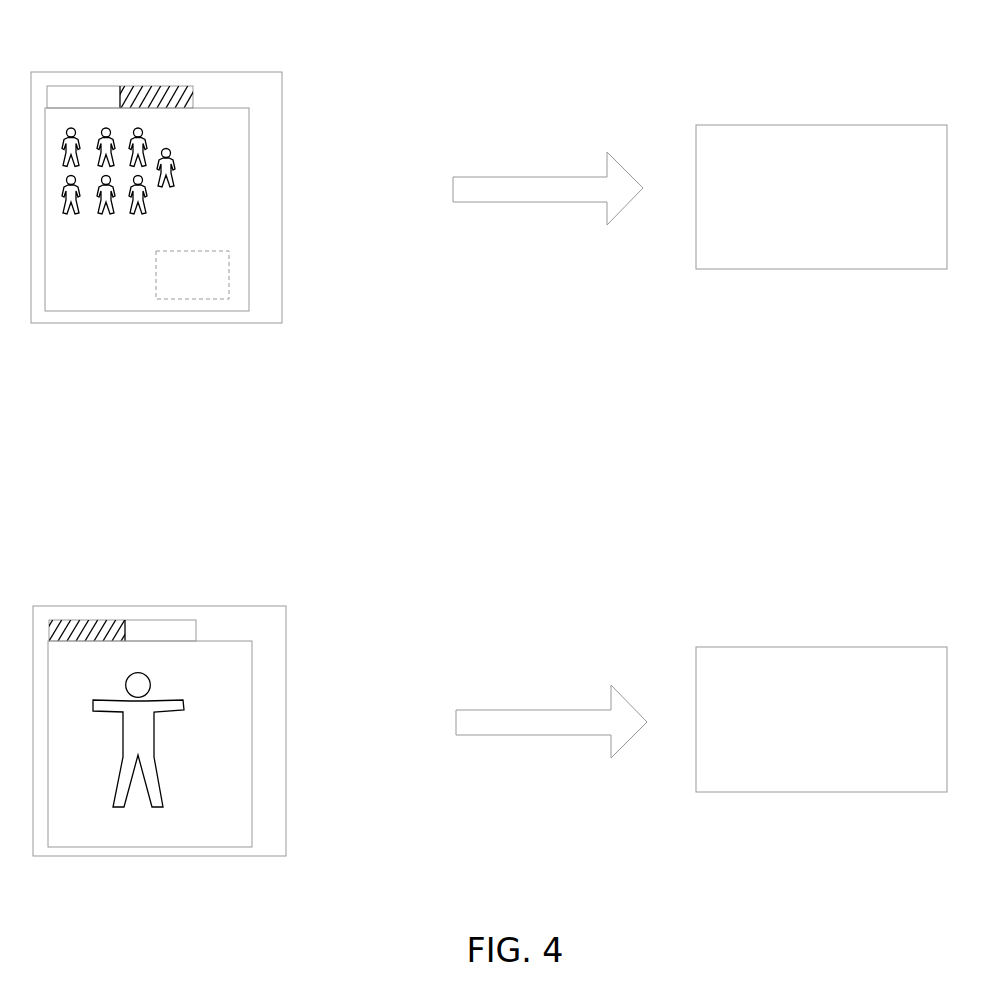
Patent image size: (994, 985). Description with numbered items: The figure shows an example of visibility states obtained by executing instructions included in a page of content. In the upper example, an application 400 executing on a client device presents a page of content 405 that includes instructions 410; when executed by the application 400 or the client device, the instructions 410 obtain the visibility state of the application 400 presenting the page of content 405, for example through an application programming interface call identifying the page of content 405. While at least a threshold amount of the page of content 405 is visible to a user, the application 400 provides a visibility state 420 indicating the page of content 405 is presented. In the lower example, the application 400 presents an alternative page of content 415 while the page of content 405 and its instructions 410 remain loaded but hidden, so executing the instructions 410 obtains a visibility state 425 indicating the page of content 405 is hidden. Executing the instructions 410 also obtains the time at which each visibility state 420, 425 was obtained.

The application 400 is at (248, 210).
The page of content 405 is at (203, 143).
The instructions 410 is at (192, 299).
The alternative page of content 415 is at (203, 677).
The visibility state indicating the page of content is visible 420 is at (841, 251).
The visibility state indicating the page of content is hidden 425 is at (841, 773).